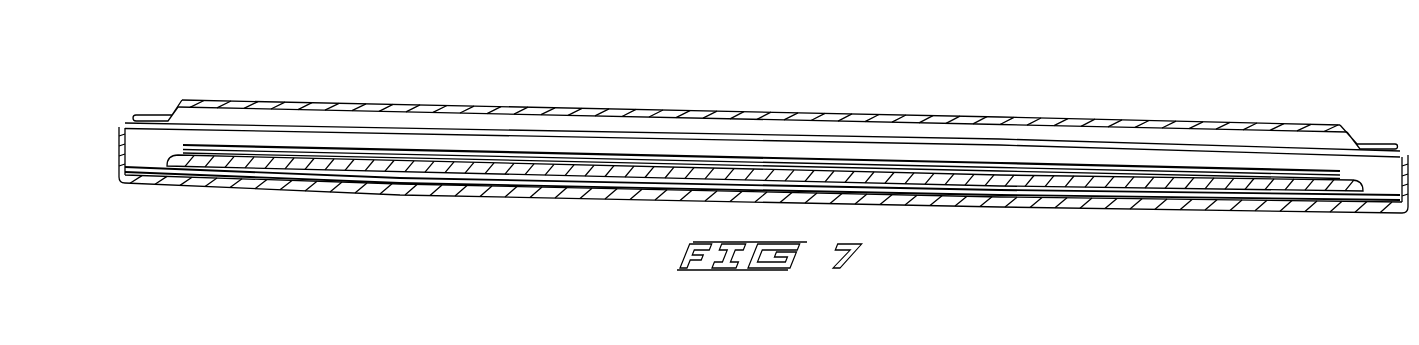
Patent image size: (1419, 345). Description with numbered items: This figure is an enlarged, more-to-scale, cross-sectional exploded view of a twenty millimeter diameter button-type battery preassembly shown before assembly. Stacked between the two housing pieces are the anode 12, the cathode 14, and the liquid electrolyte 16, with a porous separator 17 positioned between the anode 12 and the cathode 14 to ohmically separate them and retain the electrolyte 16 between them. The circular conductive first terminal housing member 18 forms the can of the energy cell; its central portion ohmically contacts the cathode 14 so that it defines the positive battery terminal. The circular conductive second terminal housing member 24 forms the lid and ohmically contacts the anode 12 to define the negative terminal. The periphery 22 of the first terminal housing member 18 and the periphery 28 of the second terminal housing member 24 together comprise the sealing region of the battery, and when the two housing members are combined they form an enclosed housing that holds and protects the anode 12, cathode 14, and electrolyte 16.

The anode 12 is at (1083, 165).
The cathode 14 is at (1058, 187).
The liquid electrolyte 16 is at (146, 166).
The porous separator 17 is at (1193, 176).
The first terminal housing member 18 is at (1258, 212).
The periphery 22 is at (115, 172).
The second terminal housing member 24 is at (888, 117).
The periphery 28 is at (168, 99).